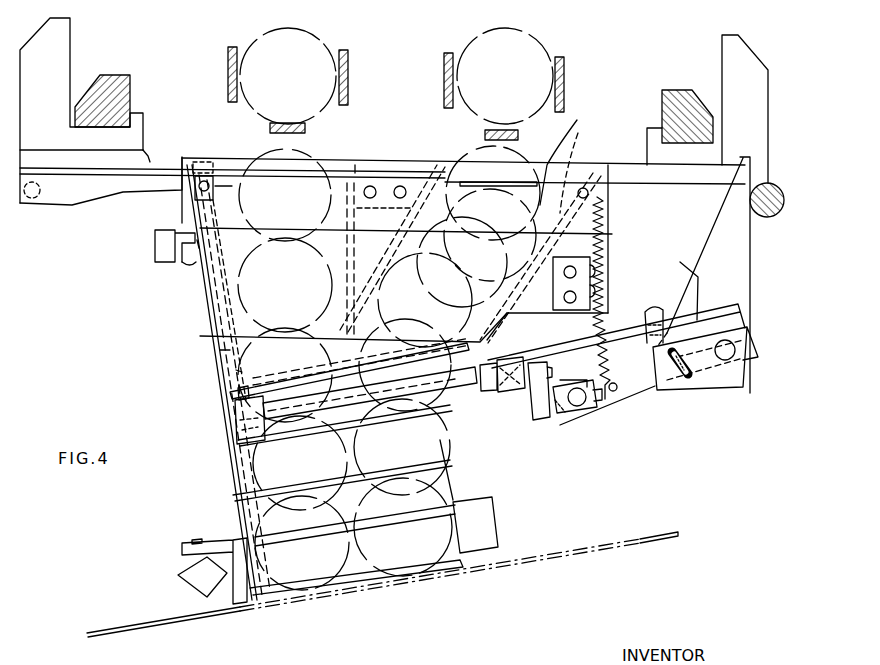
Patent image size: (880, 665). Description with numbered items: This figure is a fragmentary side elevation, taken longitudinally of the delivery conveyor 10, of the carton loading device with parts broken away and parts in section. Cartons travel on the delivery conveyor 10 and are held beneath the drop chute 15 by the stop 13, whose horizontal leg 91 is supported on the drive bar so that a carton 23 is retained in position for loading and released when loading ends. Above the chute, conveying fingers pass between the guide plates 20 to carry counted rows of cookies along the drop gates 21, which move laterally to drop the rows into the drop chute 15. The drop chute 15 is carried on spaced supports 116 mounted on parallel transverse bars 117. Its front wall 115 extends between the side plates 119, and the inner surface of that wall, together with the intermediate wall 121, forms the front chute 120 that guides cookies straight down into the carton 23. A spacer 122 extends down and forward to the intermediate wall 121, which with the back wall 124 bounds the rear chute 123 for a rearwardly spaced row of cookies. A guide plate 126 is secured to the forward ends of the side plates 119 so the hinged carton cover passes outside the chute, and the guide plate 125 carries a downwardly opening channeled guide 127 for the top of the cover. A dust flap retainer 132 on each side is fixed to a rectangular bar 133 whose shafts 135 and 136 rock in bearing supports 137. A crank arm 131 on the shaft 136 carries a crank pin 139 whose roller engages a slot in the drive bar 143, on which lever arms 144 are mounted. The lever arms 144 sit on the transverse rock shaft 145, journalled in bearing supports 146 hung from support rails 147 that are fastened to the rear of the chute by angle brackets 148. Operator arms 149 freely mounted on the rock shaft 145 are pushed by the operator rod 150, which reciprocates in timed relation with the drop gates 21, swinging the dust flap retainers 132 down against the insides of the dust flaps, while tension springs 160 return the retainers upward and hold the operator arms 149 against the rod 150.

The delivery conveyor 10 is at (179, 636).
The stop 13 is at (262, 598).
The drop chute 15 is at (208, 300).
The guide plates 20 is at (227, 63).
The drop gates 21 is at (298, 133).
The carton 23 is at (457, 565).
The horizontal leg 91 is at (212, 540).
The front wall 115 is at (154, 240).
The supports 116 is at (150, 162).
The transverse bars 117 is at (118, 76).
The side plates 119 is at (200, 295).
The chute 120 is at (218, 162).
The intermediate wall 121 is at (325, 288).
The spacer 122 is at (447, 361).
The rear chute 123 is at (474, 217).
The back wall 124 is at (486, 235).
The guide plate 125 is at (204, 278).
The guide plate 126 is at (228, 385).
The channeled guide 127 is at (182, 266).
The crank arm 131 is at (536, 408).
The dust flap retainer 132 is at (450, 412).
The rectangular bar 133 is at (493, 362).
The shaft 135 is at (228, 425).
The shaft 136 is at (524, 370).
The bearing supports 137 is at (235, 397).
The crank pin 139 is at (560, 416).
The drive bar 143 is at (577, 408).
The lever arms 144 is at (650, 398).
The rock shaft 145 is at (725, 360).
The bearing supports 146 is at (650, 310).
The support rails 147 is at (676, 281).
The angle brackets 148 is at (590, 265).
The operator arms 149 is at (740, 252).
The operator rod 150 is at (780, 185).
The tension springs 160 is at (604, 218).